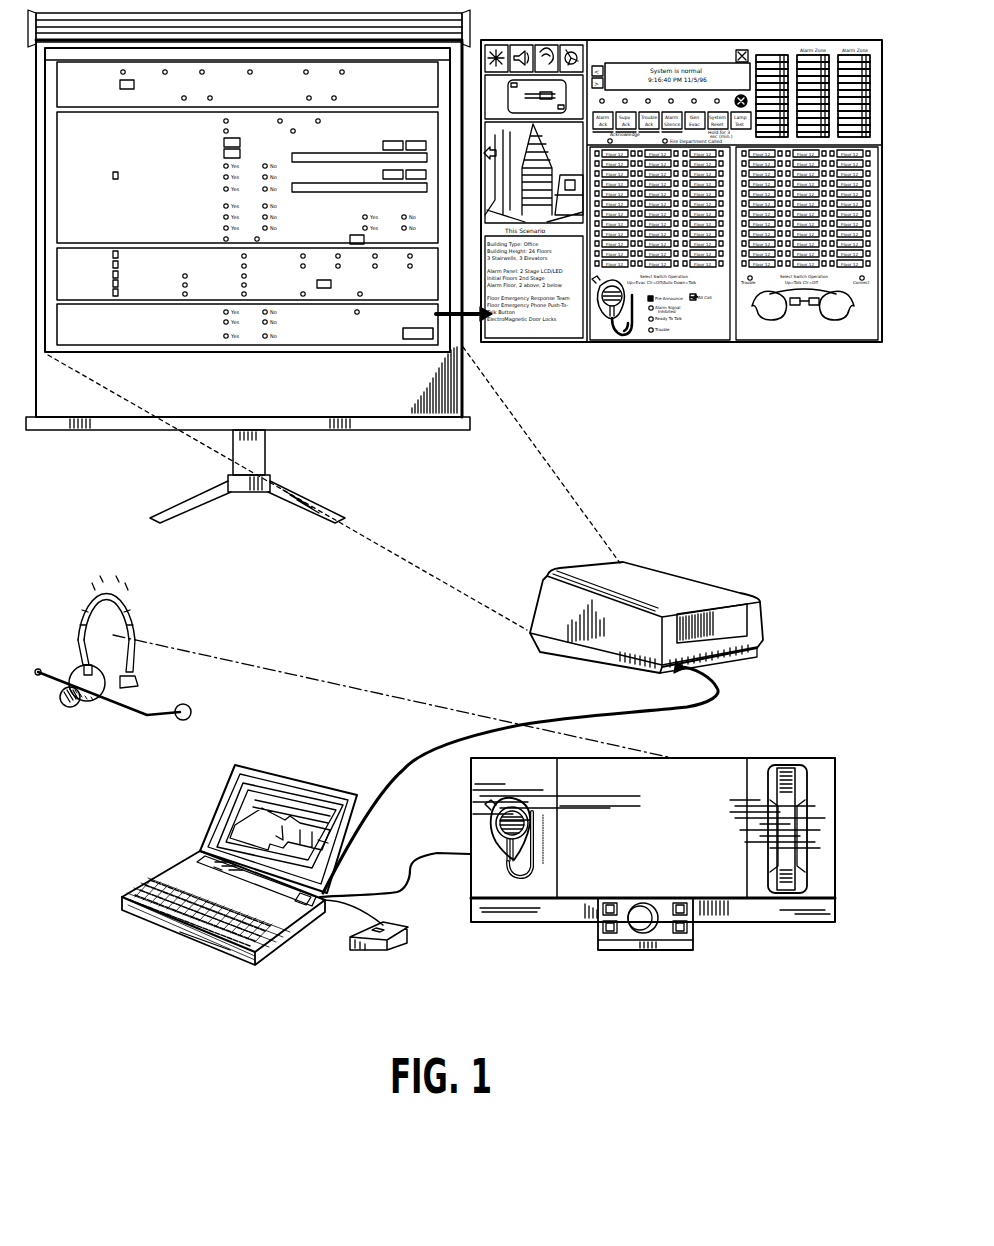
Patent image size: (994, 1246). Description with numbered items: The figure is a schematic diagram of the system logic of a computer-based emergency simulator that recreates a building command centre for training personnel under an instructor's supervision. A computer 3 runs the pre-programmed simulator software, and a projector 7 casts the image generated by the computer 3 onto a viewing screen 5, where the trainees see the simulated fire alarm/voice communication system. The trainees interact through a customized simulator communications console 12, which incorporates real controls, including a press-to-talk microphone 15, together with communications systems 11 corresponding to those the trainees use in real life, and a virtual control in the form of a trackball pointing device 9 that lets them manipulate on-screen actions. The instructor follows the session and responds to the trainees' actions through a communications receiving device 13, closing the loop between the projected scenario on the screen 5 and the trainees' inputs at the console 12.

The computer 3 is at (150, 923).
The viewing screen 5 is at (383, 426).
The projector 7 is at (661, 582).
The trackball pointing device 9 is at (611, 946).
The communications systems 11 is at (843, 772).
The simulator communications console 12 is at (808, 923).
The communications receiving device 13 is at (98, 705).
The press-to-talk microphone 15 is at (475, 887).